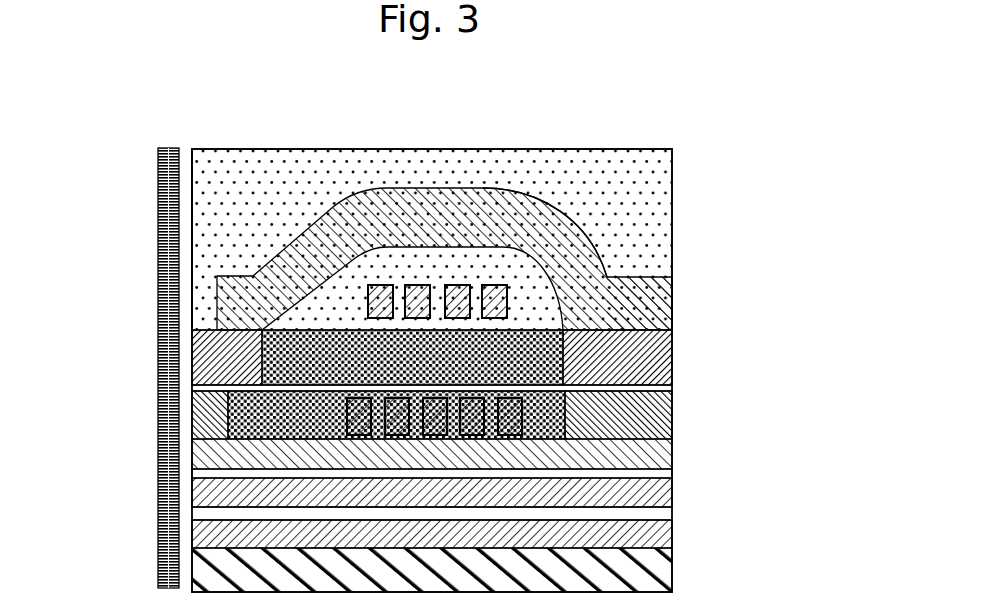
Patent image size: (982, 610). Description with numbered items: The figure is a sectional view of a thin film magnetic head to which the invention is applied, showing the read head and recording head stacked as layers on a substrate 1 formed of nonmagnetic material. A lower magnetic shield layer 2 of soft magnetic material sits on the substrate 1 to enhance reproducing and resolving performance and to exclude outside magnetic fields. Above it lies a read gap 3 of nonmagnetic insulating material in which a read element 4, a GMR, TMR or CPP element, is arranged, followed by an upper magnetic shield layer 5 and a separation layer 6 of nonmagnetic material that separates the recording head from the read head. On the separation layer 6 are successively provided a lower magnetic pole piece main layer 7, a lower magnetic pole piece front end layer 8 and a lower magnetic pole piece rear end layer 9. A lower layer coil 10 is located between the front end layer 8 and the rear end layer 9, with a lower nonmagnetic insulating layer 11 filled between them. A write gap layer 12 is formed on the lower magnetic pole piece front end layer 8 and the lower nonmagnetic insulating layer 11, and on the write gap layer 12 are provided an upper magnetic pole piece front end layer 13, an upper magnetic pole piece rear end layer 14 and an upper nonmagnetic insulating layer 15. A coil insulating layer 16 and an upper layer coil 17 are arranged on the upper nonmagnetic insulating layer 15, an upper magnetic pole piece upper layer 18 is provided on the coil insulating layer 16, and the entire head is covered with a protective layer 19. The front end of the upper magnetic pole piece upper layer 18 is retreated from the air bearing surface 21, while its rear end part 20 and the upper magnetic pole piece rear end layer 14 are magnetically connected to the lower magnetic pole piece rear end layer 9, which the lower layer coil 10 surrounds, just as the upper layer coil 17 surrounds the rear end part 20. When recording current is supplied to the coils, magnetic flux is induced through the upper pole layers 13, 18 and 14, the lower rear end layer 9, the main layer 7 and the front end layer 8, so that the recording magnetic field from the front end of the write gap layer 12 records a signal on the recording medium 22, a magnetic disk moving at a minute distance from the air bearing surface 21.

The substrate 1 is at (672, 575).
The lower magnetic shield layer 2 is at (672, 540).
The read gap 3 is at (672, 512).
The read element 4 is at (220, 513).
The upper magnetic shield layer 5 is at (672, 493).
The separation layer 6 is at (672, 475).
The lower magnetic pole piece main layer 7 is at (662, 450).
The lower magnetic pole piece front end layer 8 is at (200, 413).
The lower magnetic pole piece rear end layer 9 is at (660, 414).
The lower layer coil 10 is at (447, 392).
The lower nonmagnetic insulating layer 11 is at (550, 410).
The write gap layer 12 is at (193, 388).
The upper magnetic pole piece front end layer 13 is at (230, 360).
The upper magnetic pole piece rear end layer 14 is at (665, 348).
The upper nonmagnetic insulating layer 15 is at (297, 370).
The coil insulating layer 16 is at (328, 305).
The upper layer coil 17 is at (425, 288).
The upper magnetic pole piece upper layer 18 is at (577, 237).
The protective layer 19 is at (293, 180).
The rear end part 20 is at (650, 296).
The air bearing surface 21 is at (192, 257).
The recording medium 22 is at (158, 192).